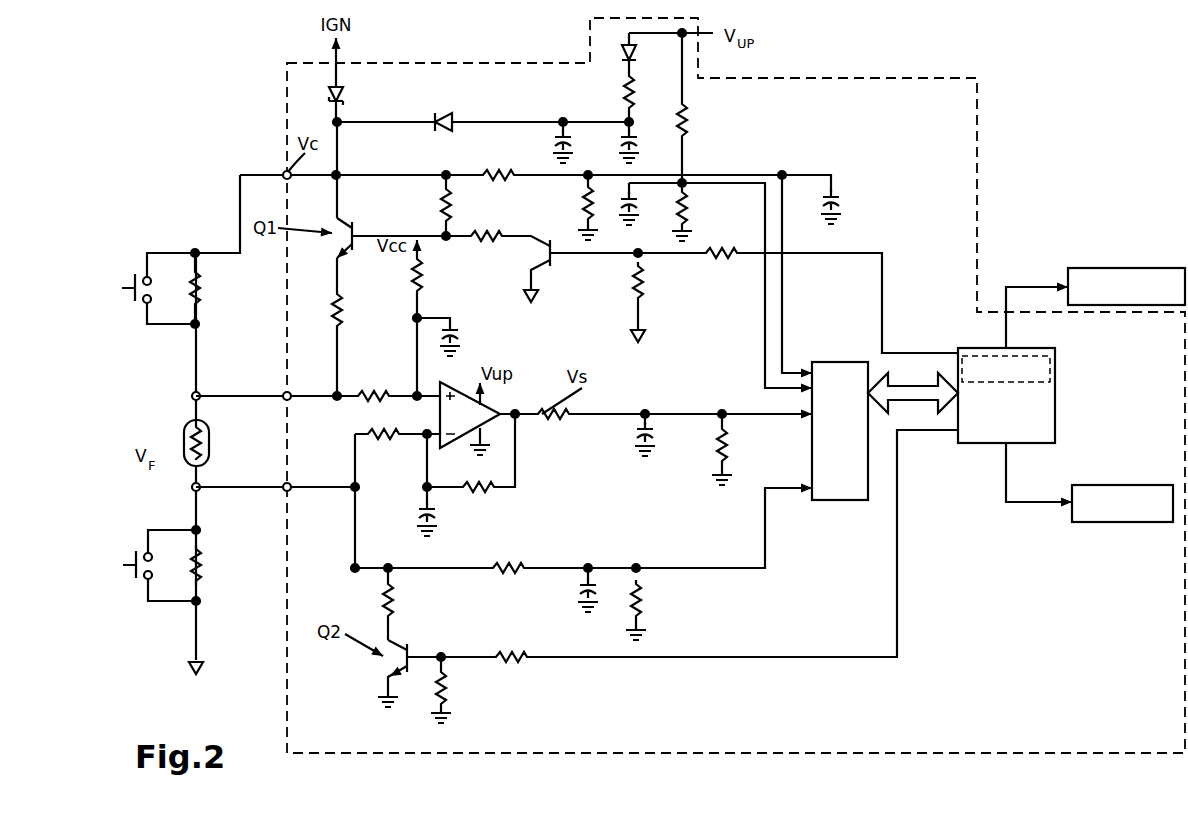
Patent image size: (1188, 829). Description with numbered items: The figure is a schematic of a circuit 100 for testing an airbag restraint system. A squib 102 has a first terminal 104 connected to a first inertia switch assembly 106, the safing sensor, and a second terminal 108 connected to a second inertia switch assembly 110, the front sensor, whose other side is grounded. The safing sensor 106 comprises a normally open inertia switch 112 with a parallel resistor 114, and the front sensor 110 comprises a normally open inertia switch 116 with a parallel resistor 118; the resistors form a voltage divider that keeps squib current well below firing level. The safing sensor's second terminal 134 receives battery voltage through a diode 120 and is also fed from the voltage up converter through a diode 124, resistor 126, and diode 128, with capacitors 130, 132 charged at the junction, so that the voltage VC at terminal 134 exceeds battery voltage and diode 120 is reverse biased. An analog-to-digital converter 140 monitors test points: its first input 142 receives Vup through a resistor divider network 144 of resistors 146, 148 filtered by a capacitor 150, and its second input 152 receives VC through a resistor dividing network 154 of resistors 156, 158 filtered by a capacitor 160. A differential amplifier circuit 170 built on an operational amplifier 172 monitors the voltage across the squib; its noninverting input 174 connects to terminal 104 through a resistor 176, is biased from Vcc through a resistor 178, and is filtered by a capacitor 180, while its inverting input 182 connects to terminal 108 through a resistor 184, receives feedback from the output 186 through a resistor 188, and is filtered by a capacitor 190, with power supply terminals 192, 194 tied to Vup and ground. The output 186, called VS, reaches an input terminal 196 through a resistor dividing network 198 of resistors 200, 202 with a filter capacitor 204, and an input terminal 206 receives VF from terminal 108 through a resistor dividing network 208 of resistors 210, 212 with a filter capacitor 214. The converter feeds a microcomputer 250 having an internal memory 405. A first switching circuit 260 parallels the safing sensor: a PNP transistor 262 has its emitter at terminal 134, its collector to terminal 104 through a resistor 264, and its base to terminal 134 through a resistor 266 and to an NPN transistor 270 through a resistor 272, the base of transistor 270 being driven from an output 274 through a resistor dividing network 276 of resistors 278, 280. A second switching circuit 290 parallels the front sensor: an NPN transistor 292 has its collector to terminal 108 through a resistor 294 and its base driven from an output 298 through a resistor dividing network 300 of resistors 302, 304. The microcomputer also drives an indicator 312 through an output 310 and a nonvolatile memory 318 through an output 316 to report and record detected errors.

The circuit 100 is at (1012, 170).
The squib 102 is at (210, 445).
The first terminal 104 is at (200, 394).
The first inertia switch assembly 106 is at (180, 232).
The second terminal 108 is at (158, 462).
The second inertia switch assembly 110 is at (170, 642).
The normally open inertia switch 112 is at (134, 280).
The resistor 114 is at (213, 297).
The normally open inertia switch 116 is at (135, 557).
The resistor 118 is at (205, 565).
The diode 120 is at (345, 98).
The diode 124 is at (622, 51).
The resistor 126 is at (622, 92).
The diode 128 is at (440, 118).
The capacitor 130 is at (556, 140).
The capacitor 132 is at (640, 140).
The second terminal 134 is at (284, 172).
The analog-to-digital converter 140 is at (859, 361).
The first input 142 is at (808, 394).
The resistor divider network 144 is at (787, 153).
The resistor 146 is at (690, 122).
The resistor 148 is at (690, 217).
The filter capacitor 150 is at (637, 204).
The second input 152 is at (803, 372).
The resistor dividing network 154 is at (572, 212).
The resistor 156 is at (492, 173).
The resistor 158 is at (585, 207).
The filter capacitor 160 is at (843, 204).
The differential amplifier circuit 170 is at (555, 364).
The operational amplifier 172 is at (465, 427).
The noninverting input 174 is at (438, 396).
The resistor 176 is at (368, 404).
The resistor 178 is at (412, 283).
The filter capacitor 180 is at (462, 337).
The inverting input 182 is at (440, 434).
The resistor 184 is at (384, 439).
The output 186 is at (506, 412).
The resistor 188 is at (486, 488).
The filter capacitor 190 is at (437, 519).
The power supply connection terminal 192 is at (477, 400).
The power supply connection terminal 194 is at (482, 421).
The input terminal 196 is at (808, 421).
The resistor dividing network 198 is at (676, 405).
The resistor 200 is at (572, 412).
The resistor 202 is at (718, 453).
The filter capacitor 204 is at (643, 442).
The input terminal 206 is at (808, 490).
The resistor dividing network 208 is at (641, 542).
The resistor 210 is at (512, 565).
The resistor 212 is at (648, 594).
The filter capacitor 214 is at (580, 591).
The microcomputer 250 is at (992, 436).
The first switching circuit 260 is at (333, 226).
The PNP transistor 262 is at (348, 242).
The resistor 264 is at (330, 311).
The resistor 266 is at (440, 204).
The NPN transistor 270 is at (546, 263).
The resistor 272 is at (500, 241).
The output 274 is at (955, 353).
The resistor dividing network 276 is at (692, 292).
The resistor 278 is at (718, 258).
The resistor 280 is at (636, 292).
The second switching circuit 290 is at (365, 671).
The NPN transistor 292 is at (408, 648).
The resistor 294 is at (395, 601).
The output 298 is at (955, 432).
The resistor dividing network 300 is at (488, 704).
The resistor 302 is at (510, 656).
The resistor 304 is at (447, 696).
The output 310 is at (1010, 348).
The indicator 312 is at (1125, 268).
The output 316 is at (1004, 446).
The nonvolatile memory 318 is at (1122, 485).
The internal memory 405 is at (990, 355).